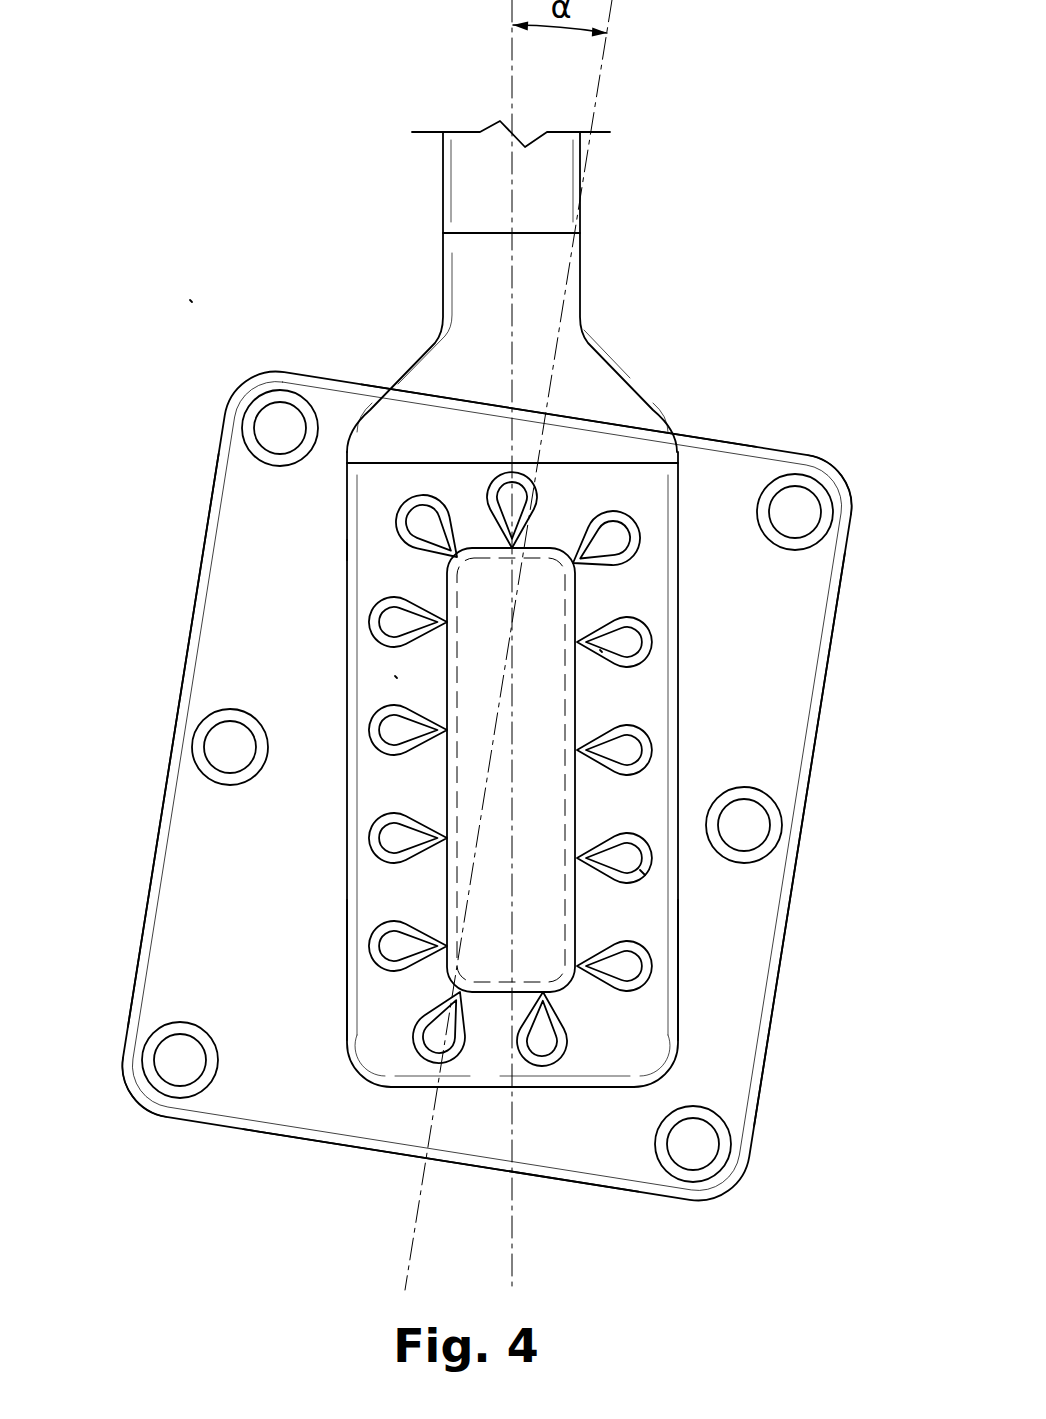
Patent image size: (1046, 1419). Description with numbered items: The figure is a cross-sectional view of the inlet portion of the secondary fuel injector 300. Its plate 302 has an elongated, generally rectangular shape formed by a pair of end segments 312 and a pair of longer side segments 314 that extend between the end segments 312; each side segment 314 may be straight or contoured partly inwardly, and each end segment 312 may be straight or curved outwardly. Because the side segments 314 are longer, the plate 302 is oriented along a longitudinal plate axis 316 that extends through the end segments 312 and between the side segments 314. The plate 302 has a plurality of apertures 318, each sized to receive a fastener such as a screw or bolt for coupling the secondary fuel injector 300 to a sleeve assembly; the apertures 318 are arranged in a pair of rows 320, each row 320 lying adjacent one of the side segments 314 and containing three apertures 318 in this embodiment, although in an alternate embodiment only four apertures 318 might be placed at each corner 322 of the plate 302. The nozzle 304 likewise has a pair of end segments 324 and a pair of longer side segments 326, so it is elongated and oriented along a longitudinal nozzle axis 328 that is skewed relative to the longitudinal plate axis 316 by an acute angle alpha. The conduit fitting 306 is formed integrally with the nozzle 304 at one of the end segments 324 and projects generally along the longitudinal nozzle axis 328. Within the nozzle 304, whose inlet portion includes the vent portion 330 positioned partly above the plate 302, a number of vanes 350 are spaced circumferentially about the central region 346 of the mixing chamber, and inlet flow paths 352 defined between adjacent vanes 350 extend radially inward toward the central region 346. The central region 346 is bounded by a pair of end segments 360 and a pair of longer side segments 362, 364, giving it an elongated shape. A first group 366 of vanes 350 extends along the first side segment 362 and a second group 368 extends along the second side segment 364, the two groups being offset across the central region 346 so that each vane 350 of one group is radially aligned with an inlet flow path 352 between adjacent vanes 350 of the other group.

The secondary fuel injector 300 is at (176, 282).
The plate 302 is at (188, 838).
The nozzle 304 is at (310, 550).
The conduit fitting 306 is at (612, 302).
The end segments 312 is at (773, 446).
The side segments 314 is at (134, 976).
The longitudinal plate axis 316 is at (602, 62).
The apertures 318 is at (807, 553).
The rows 320 is at (840, 470).
The corner 322 is at (135, 1103).
The end segments 324 is at (575, 463).
The side segments 326 is at (345, 994).
The longitudinal nozzle axis 328 is at (512, 40).
The vent portion 330 is at (375, 668).
The central region 346 is at (534, 779).
The vanes 350 is at (623, 878).
The inlet flow paths 352 is at (630, 690).
The end segments 360 is at (540, 548).
The first side segment 362 is at (447, 773).
The second side segment 364 is at (578, 819).
The first group 366 is at (430, 475).
The second group 368 is at (635, 475).